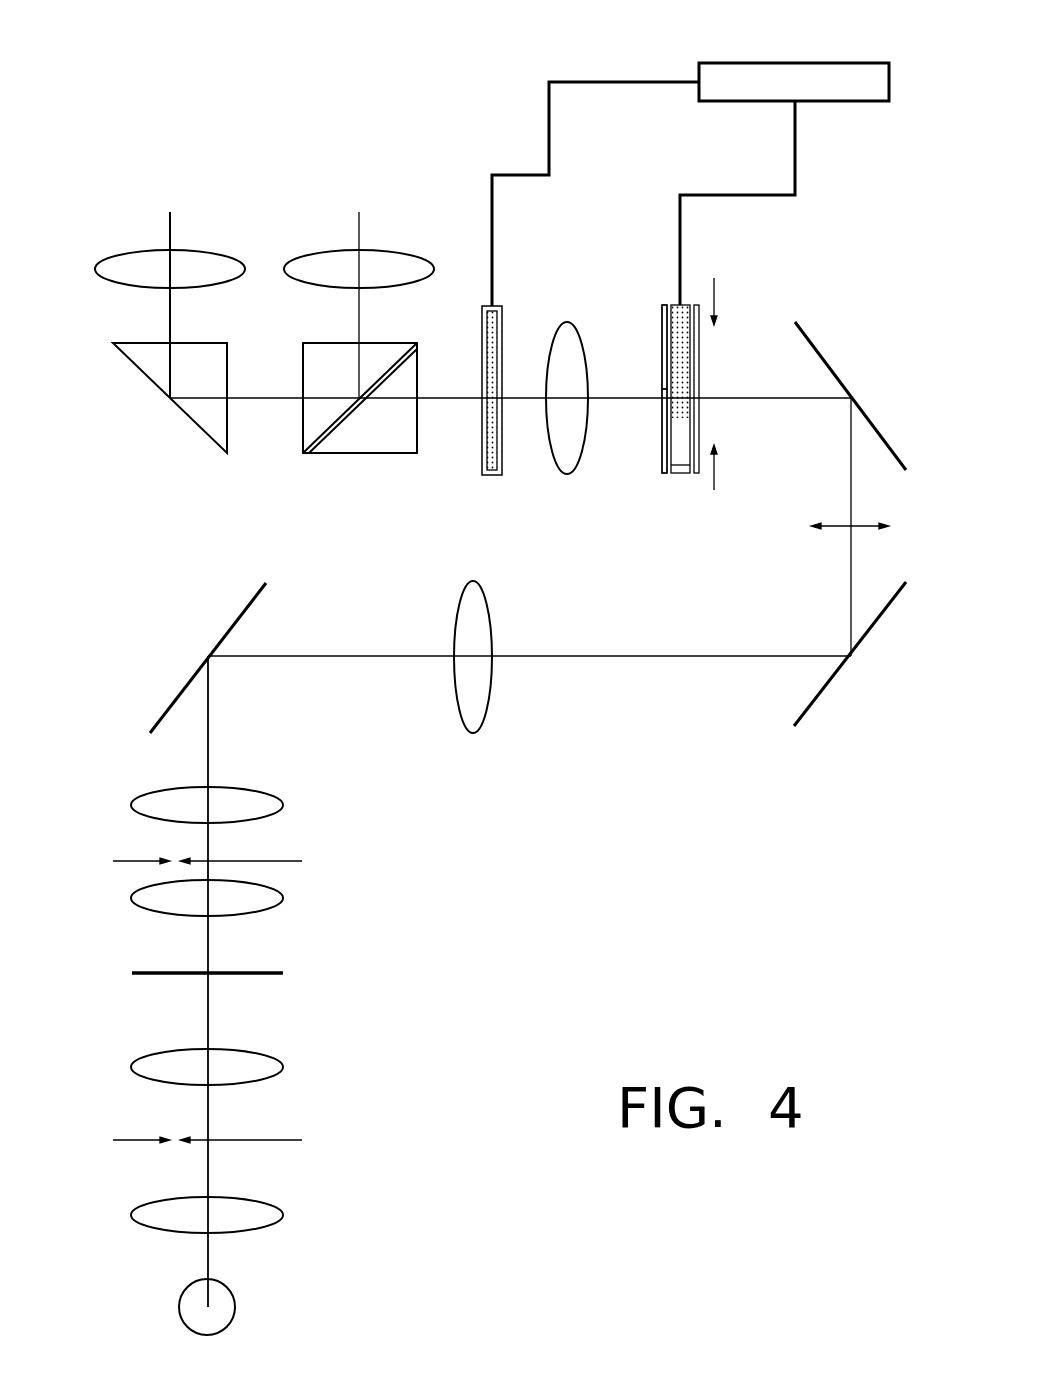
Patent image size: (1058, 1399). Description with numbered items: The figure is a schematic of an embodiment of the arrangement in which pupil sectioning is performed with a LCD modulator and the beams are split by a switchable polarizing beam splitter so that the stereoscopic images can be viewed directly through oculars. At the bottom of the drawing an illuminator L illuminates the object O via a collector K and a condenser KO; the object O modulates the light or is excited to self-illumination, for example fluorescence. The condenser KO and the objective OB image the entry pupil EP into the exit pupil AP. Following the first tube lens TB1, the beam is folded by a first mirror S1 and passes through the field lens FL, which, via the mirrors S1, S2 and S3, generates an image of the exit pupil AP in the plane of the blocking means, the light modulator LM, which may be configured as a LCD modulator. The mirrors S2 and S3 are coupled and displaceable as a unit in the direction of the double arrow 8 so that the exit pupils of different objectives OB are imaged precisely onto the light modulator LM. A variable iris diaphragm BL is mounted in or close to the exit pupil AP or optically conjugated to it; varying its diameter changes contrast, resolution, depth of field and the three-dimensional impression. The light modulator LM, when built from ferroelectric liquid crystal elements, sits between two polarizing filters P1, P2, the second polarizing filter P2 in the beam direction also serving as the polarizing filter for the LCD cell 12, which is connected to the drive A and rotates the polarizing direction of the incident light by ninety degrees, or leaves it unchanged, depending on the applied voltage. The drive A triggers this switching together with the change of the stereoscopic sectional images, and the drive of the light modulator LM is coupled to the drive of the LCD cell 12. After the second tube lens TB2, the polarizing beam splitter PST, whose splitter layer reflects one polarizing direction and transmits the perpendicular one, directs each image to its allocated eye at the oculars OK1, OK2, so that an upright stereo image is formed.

The ocular OK1 is at (170, 332).
The ocular OK2 is at (359, 305).
The polarizing beam splitter PST is at (360, 418).
The LCD cell 12 is at (503, 323).
The tube lens TB2 is at (577, 462).
The light modulator LM is at (690, 303).
The polarizing filter P1 is at (660, 312).
The polarizing filter P2 is at (693, 475).
The variable iris diaphragm BL is at (718, 290).
The drive A is at (810, 63).
The mirror S3 is at (840, 376).
The double arrow 8 is at (844, 526).
The mirror S2 is at (881, 628).
The mirror S1 is at (227, 632).
The field lens FL is at (473, 678).
The tube lens TB1 is at (283, 805).
The exit pupil AP is at (226, 865).
The objective OB is at (283, 898).
The object O is at (290, 977).
The condenser KO is at (283, 1067).
The entry pupil EP is at (223, 1142).
The collector K is at (283, 1215).
The illuminator L is at (235, 1307).